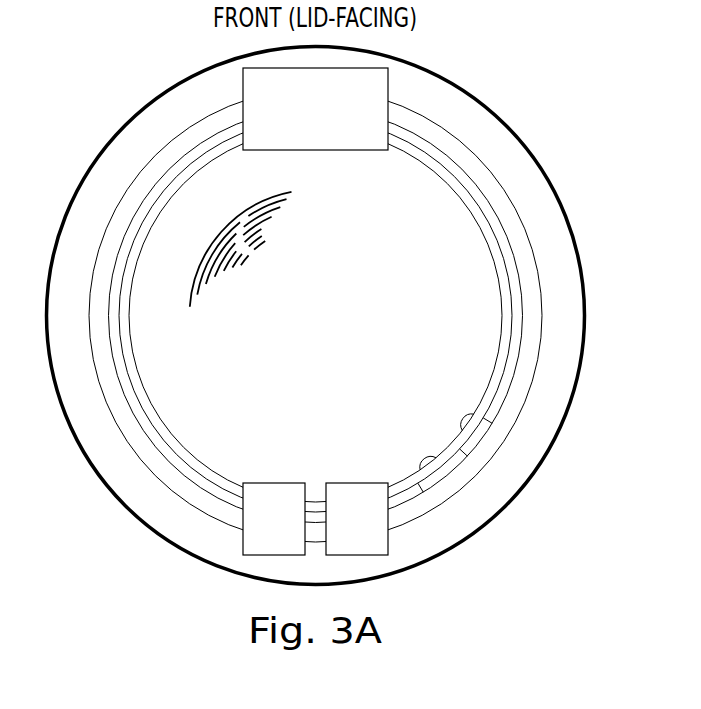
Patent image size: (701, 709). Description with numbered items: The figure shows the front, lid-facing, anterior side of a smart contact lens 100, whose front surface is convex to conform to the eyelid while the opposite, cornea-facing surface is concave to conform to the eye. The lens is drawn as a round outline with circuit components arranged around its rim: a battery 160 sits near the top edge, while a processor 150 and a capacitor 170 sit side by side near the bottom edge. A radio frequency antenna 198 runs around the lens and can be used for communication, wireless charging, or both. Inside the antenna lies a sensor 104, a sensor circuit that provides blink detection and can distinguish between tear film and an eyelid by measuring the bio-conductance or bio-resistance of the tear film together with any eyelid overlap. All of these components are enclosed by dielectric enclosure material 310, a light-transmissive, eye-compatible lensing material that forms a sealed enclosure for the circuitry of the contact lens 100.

The smart contact lens 100 is at (573, 84).
The radio frequency antenna 198 is at (173, 138).
The sensor 104 is at (503, 317).
The dielectric enclosure material 310 is at (338, 333).
The battery 160 is at (338, 125).
The processor 150 is at (296, 534).
The capacitor 170 is at (379, 534).